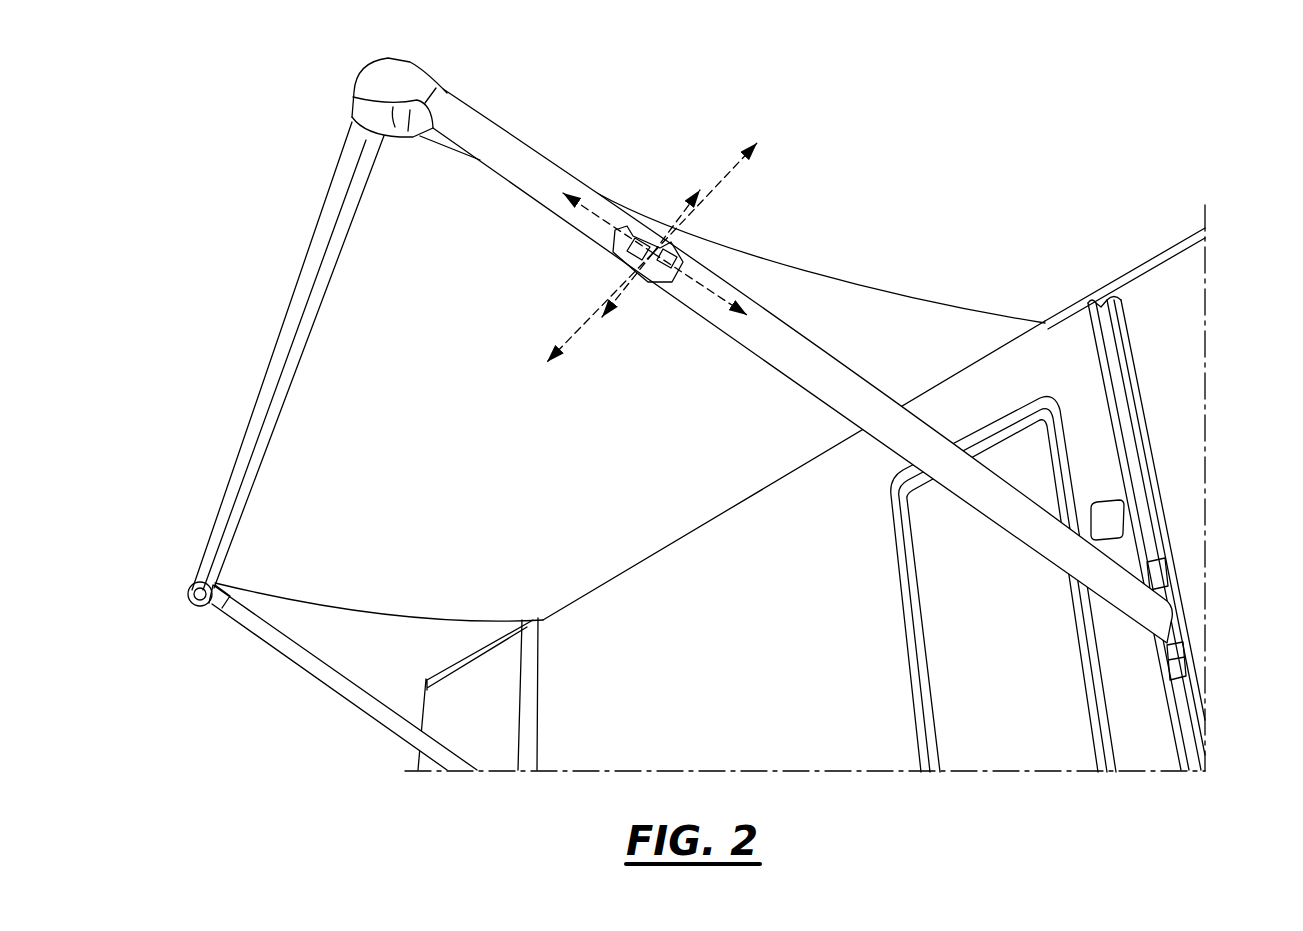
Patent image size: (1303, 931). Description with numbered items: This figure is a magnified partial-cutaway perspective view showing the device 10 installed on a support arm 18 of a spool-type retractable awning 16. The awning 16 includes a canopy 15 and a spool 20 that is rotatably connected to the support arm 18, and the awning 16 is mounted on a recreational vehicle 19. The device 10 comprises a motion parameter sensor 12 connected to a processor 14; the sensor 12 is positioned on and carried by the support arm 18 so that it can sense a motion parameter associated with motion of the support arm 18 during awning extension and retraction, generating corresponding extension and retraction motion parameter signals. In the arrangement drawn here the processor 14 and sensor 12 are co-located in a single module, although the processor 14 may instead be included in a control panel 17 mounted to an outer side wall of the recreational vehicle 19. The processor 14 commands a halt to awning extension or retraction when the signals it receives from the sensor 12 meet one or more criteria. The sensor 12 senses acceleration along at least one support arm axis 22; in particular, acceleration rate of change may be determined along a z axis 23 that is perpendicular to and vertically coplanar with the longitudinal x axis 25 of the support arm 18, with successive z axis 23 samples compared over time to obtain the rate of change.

The device 10 is at (677, 242).
The motion parameter sensor 12 is at (643, 243).
The processor 14 is at (672, 254).
The canopy 15 is at (432, 358).
The retractable awning 16 is at (286, 314).
The control panel 17 is at (1115, 518).
The support arm 18 is at (787, 350).
The recreational vehicle 19 is at (1177, 268).
The spool 20 is at (266, 422).
The support arm axis 22 is at (598, 212).
The z axis 23 is at (623, 293).
The x axis 25 is at (588, 312).